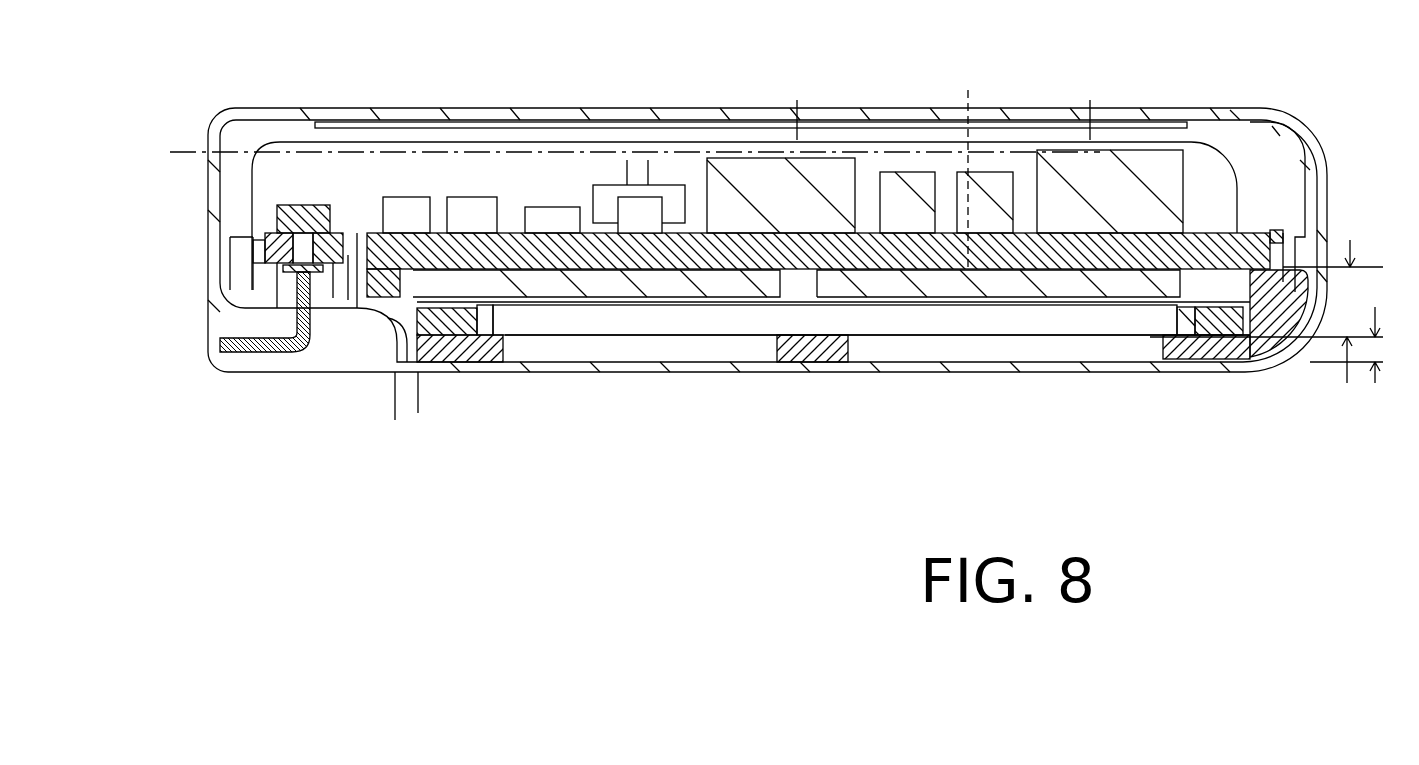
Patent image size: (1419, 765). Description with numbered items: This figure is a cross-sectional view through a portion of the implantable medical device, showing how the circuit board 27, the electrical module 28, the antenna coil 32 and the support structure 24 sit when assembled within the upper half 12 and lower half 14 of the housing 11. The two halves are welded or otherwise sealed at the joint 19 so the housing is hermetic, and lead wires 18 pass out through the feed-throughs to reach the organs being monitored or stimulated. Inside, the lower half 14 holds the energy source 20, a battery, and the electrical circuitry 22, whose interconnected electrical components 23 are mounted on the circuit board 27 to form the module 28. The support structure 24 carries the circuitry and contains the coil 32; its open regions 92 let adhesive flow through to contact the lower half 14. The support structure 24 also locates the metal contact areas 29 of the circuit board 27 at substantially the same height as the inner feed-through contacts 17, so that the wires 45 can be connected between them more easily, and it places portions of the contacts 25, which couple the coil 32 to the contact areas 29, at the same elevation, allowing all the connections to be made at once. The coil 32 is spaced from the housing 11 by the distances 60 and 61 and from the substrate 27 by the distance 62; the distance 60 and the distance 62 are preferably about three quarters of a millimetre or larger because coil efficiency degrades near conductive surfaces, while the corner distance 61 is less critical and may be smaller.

The housing 11 is at (141, 339).
The upper half 12 is at (287, 107).
The lower half 14 is at (207, 272).
The inner portions of electrical feed-throughs 17 is at (290, 216).
The lead wires 18 is at (275, 355).
The joint 19 is at (1325, 222).
The energy source 20 is at (322, 160).
The electrical circuitry 22 is at (888, 166).
The electrical components 23 is at (820, 209).
The support structure 24 is at (505, 345).
The contacts 25 is at (1070, 126).
The circuit board 27 is at (595, 255).
The electrical module 28 is at (695, 163).
The metal contact areas 29 is at (453, 296).
The antenna coil 32 is at (472, 340).
The wires 45 is at (392, 197).
The distance 60 is at (1380, 347).
The distance 61 is at (433, 408).
The distance 62 is at (1347, 297).
The open regions 92 is at (885, 350).